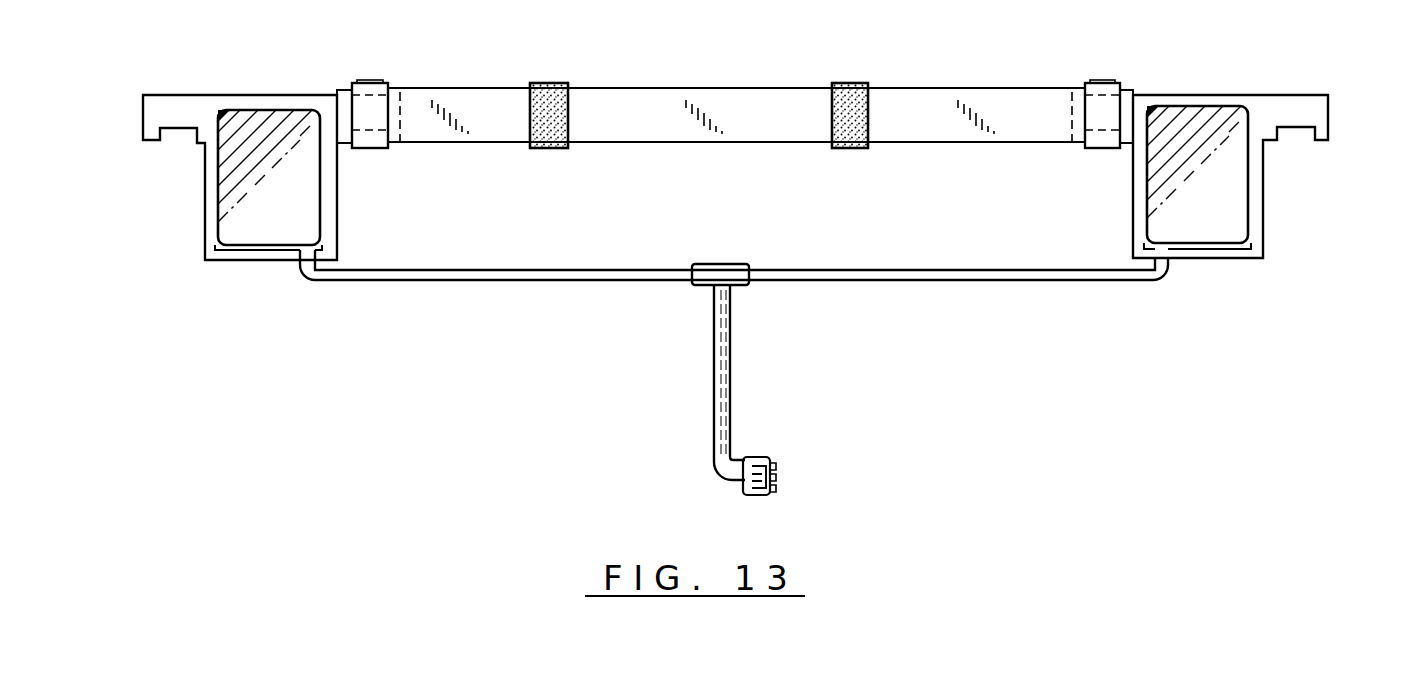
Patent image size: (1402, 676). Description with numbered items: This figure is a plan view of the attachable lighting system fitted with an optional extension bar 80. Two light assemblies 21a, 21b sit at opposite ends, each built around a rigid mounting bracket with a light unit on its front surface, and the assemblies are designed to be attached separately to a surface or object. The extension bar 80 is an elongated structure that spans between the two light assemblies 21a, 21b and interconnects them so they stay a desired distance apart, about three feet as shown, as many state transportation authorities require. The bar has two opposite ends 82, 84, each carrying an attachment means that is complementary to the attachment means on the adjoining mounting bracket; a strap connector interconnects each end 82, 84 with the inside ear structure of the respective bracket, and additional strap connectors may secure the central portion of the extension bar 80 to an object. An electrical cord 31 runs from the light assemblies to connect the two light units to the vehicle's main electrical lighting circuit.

The light assembly 21a is at (190, 91).
The light assembly 21b is at (1247, 92).
The electrical cord 31 is at (708, 366).
The extension bar 80 is at (628, 88).
The end of extension bar 82 is at (337, 118).
The end of extension bar 84 is at (1133, 101).